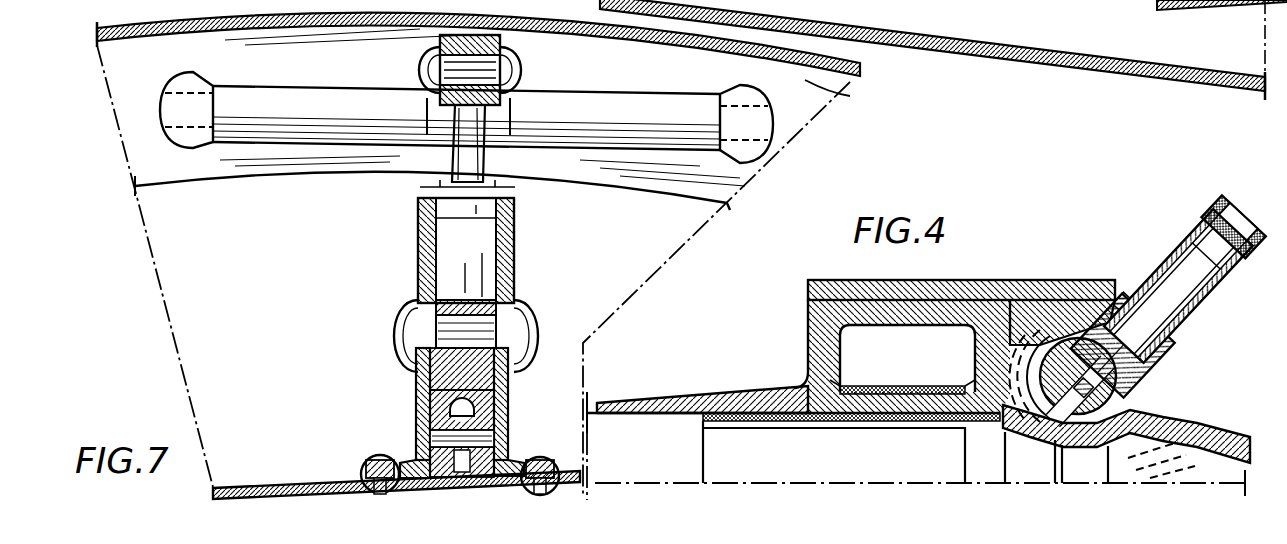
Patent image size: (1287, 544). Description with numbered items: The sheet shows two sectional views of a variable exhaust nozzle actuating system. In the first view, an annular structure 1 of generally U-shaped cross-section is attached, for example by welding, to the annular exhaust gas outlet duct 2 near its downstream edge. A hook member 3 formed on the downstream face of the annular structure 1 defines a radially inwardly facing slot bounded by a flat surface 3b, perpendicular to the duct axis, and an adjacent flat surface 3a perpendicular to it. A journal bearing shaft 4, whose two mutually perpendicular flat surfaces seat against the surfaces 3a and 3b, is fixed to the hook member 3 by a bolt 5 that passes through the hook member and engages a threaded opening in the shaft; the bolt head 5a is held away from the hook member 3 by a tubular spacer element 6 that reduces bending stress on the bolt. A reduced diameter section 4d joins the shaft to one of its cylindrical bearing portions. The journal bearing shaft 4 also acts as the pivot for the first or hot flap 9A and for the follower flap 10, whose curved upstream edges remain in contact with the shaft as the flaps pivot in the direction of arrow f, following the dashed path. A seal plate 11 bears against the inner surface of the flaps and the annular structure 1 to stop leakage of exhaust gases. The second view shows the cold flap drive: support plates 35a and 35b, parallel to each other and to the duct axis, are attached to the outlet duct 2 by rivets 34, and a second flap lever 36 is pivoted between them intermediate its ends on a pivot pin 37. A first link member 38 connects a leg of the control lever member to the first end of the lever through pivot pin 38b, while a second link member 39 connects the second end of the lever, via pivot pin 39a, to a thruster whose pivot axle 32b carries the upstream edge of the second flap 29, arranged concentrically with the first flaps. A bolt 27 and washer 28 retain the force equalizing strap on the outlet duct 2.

In FIG. 4, the annular structure 1 is at (813, 323).
In FIG. 7, the annular exhaust gas outlet duct 2 is at (568, 477).
In FIG. 4, the annular exhaust gas outlet duct 2 is at (610, 398).
In FIG. 4, the hook member 3 is at (1020, 283).
In FIG. 4, the flat surface 3a is at (1065, 340).
In FIG. 4, the flat surface 3b is at (1150, 367).
In FIG. 4, the journal bearing shaft 4 is at (1085, 464).
In FIG. 4, the reduced diameter section 4d is at (1045, 436).
In FIG. 4, the bolt 5 is at (1197, 258).
In FIG. 4, the bolt head 5a is at (1228, 208).
In FIG. 4, the tubular spacer element 6 is at (1157, 267).
In FIG. 4, the first flap 9A is at (1226, 419).
In FIG. 4, the follower flap 10 is at (1151, 463).
In FIG. 4, the seal plate 11 is at (1005, 445).
In FIG. 4, the arrow f is at (1215, 458).
In FIG. 7, the bolt 27 is at (478, 38).
In FIG. 7, the washer 28 is at (691, 50).
In FIG. 7, the second flap 29 is at (873, 60).
In FIG. 7, the pivot axle 32b is at (508, 138).
In FIG. 7, the rivet 34 is at (362, 465).
In FIG. 7, the support plate 35a is at (507, 383).
In FIG. 7, the support plate 35b is at (412, 390).
In FIG. 7, the second flap lever 36 is at (477, 247).
In FIG. 7, the pivot pin 37 is at (473, 325).
In FIG. 7, the first link member 38 is at (413, 440).
In FIG. 7, the pivot pin 38b is at (483, 430).
In FIG. 7, the second link member 39 is at (500, 43).
In FIG. 7, the pivot pin 39a is at (470, 65).